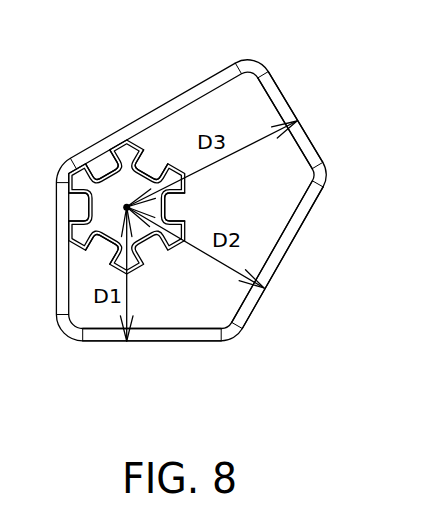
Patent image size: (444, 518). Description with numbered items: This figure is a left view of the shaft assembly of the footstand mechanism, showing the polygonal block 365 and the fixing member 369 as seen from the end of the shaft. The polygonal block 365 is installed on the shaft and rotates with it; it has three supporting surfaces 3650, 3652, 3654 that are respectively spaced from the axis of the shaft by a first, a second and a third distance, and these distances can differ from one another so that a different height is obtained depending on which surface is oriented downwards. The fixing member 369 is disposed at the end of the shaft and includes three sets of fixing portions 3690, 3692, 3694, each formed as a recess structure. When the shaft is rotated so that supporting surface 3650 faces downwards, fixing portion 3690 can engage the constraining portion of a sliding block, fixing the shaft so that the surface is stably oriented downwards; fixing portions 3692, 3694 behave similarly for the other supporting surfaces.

The polygonal block 365 is at (234, 90).
The supporting surface 3650 is at (108, 341).
The supporting surface 3652 is at (290, 244).
The supporting surface 3654 is at (285, 96).
The fixing member 369 is at (88, 187).
The fixing portion 3690 is at (184, 206).
The fixing portion 3692 is at (153, 156).
The fixing portion 3694 is at (105, 156).